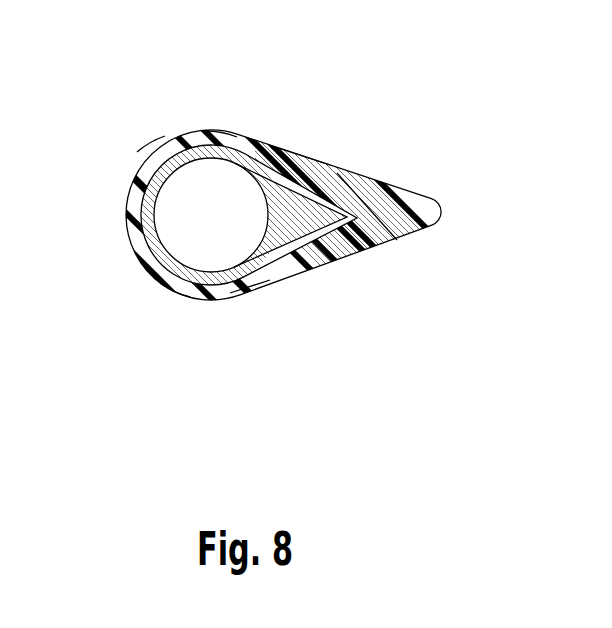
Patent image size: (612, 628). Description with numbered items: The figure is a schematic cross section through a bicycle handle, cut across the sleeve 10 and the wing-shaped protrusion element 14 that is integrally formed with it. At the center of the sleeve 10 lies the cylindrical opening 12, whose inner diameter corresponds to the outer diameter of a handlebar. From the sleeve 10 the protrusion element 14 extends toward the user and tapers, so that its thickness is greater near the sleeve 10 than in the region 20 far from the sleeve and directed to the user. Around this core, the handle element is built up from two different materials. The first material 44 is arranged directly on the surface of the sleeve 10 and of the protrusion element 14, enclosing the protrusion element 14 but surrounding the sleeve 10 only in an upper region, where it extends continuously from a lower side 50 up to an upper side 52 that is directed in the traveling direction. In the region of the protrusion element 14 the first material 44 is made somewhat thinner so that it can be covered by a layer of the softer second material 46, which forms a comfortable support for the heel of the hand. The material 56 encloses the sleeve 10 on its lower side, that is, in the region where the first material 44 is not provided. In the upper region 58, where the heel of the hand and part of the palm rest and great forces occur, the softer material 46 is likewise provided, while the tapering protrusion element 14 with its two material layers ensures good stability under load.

The sleeve 10 is at (137, 224).
The cylindrical opening 12 is at (219, 226).
The protrusion element 14 is at (351, 202).
The region far from the sleeve 20 is at (393, 247).
The first material 44 is at (302, 188).
The second material 46 is at (216, 133).
The lower side 50 is at (259, 294).
The upper side 52 is at (146, 127).
The material 56 is at (172, 308).
The upper region 58 is at (307, 99).